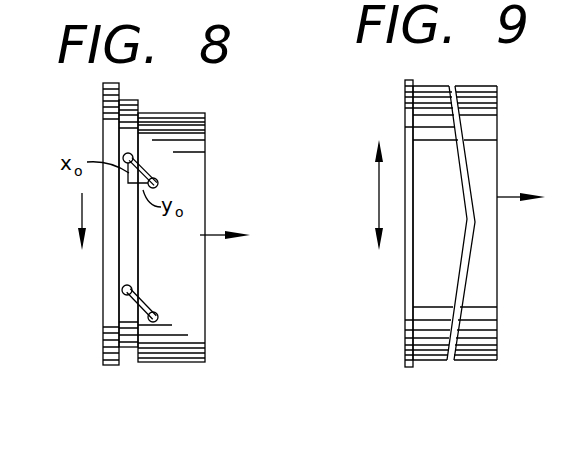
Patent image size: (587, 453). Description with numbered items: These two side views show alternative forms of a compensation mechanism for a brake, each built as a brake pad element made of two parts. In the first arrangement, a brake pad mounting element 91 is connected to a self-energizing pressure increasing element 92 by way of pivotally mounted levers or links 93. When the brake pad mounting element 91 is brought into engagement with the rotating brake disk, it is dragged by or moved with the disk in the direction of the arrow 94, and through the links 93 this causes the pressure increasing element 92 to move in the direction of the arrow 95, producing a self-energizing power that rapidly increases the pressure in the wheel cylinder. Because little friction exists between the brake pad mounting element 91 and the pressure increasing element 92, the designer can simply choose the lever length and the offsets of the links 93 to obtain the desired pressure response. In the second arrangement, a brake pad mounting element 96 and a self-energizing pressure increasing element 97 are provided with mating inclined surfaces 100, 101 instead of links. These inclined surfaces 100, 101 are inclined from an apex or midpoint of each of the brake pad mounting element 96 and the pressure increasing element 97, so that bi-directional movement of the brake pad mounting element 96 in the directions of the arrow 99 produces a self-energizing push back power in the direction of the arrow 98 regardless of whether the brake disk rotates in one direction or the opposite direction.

In FIG. 8, the brake pad mounting element 91 is at (130, 100).
In FIG. 8, the self-energizing pressure increasing element 92 is at (178, 113).
In FIG. 8, the pivotally mounted levers or links 93 is at (142, 301).
In FIG. 8, the arrow 94 is at (82, 206).
In FIG. 8, the arrow 95 is at (208, 235).
In FIG. 9, the brake pad mounting element 96 is at (430, 86).
In FIG. 9, the self-energizing pressure increasing element 97 is at (465, 86).
In FIG. 9, the arrow 98 is at (500, 197).
In FIG. 9, the arrow 99 is at (379, 192).
In FIG. 9, the inclined surface 100 is at (460, 287).
In FIG. 9, the inclined surface 101 is at (457, 137).